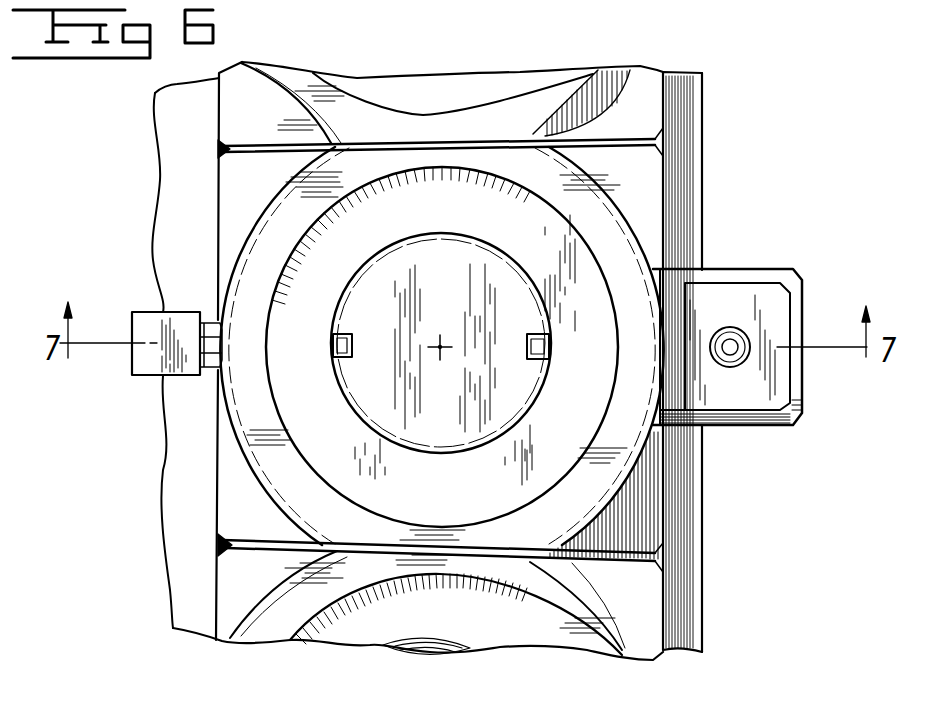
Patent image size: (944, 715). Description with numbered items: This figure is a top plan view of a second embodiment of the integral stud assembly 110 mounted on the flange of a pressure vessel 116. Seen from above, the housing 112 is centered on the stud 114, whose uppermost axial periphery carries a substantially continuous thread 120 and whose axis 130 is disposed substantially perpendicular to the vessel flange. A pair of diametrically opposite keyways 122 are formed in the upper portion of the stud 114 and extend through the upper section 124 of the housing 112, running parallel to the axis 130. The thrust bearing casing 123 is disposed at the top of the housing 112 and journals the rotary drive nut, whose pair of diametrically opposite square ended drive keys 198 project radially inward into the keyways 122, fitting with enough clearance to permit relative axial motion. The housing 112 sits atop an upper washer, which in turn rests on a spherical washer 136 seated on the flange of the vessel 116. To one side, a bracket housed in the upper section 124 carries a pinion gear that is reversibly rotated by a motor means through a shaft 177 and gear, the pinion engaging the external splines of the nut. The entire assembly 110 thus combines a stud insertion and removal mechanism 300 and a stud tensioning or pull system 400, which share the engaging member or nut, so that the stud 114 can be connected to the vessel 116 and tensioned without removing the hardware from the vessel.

The integral stud assembly 110 is at (668, 162).
The housing 112 is at (262, 485).
The stud 114 is at (457, 276).
The vessel 116 is at (700, 557).
The thread 120 is at (437, 450).
The keyways 122 is at (527, 344).
The thrust bearing casing 123 is at (352, 190).
The upper section 124 is at (262, 255).
The axis 130 is at (440, 360).
The spherical washer 136 is at (653, 527).
The shaft 177 is at (731, 338).
The drive keys 198 is at (334, 358).
The stud insertion and removal mechanism 300 is at (803, 258).
The stud tensioning or pull system 400 is at (133, 400).